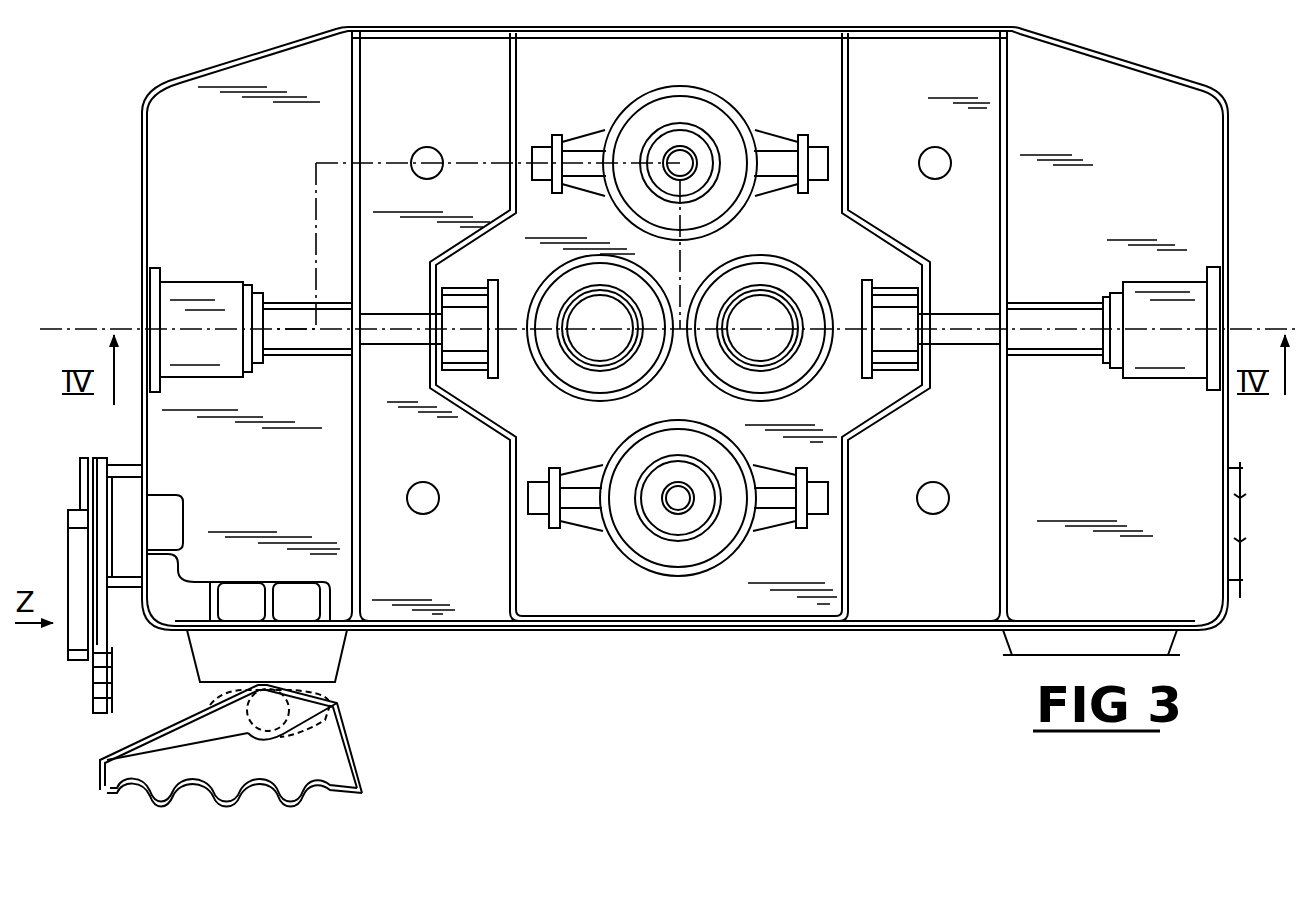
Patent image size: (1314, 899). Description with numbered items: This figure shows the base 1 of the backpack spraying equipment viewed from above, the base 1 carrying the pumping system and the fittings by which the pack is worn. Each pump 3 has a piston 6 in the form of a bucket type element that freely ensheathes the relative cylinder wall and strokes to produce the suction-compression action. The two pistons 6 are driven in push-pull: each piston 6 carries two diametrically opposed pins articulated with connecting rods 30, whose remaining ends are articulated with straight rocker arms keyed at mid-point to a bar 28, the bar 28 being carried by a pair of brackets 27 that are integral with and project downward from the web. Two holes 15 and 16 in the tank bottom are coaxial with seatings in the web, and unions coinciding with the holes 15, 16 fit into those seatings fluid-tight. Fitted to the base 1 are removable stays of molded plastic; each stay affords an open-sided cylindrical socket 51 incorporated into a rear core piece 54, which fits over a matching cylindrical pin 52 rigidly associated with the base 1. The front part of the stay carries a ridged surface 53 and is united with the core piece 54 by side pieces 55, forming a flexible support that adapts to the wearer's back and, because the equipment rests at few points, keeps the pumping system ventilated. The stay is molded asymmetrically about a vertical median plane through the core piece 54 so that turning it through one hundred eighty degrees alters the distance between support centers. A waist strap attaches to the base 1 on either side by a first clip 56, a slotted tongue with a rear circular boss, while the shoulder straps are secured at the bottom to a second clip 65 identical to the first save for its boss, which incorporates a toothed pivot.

The base 1 is at (768, 642).
The pump 3 is at (742, 96).
The piston 6 is at (616, 120).
The hole 15 is at (579, 339).
The hole 16 is at (775, 342).
The bracket 27 is at (1017, 290).
The bar 28 is at (1068, 357).
The connecting rod 30 is at (809, 149).
The socket 51 is at (104, 760).
The cylindrical pin 52 is at (277, 710).
The ridged surface 53 is at (330, 781).
The core piece 54 is at (246, 735).
The side piece 55 is at (350, 738).
The first clip 56 is at (100, 667).
The second clip 65 is at (77, 587).